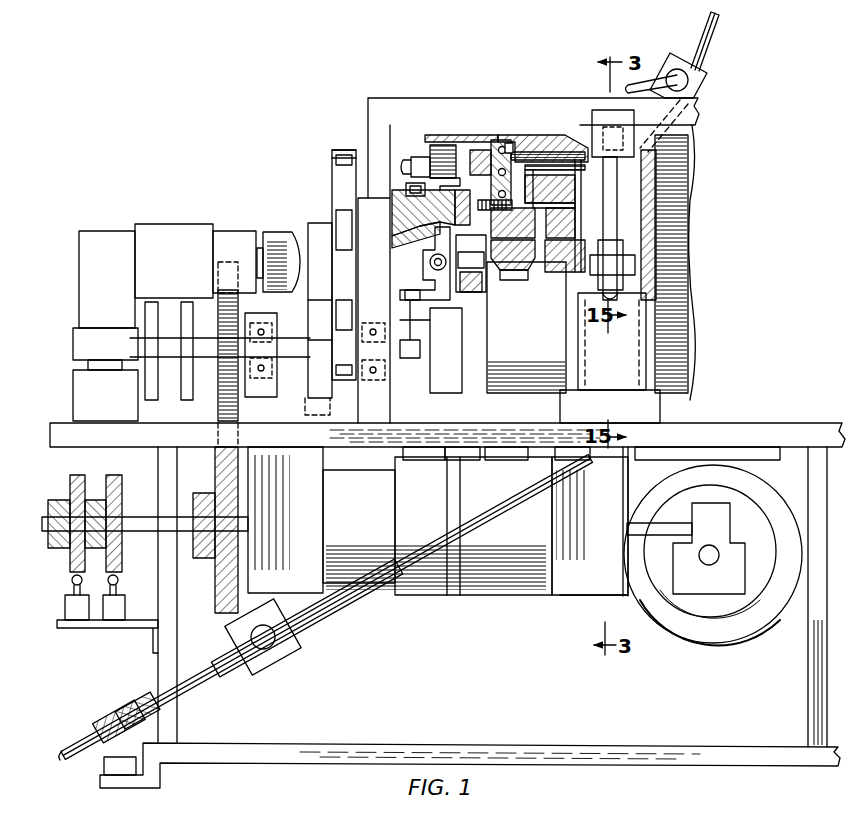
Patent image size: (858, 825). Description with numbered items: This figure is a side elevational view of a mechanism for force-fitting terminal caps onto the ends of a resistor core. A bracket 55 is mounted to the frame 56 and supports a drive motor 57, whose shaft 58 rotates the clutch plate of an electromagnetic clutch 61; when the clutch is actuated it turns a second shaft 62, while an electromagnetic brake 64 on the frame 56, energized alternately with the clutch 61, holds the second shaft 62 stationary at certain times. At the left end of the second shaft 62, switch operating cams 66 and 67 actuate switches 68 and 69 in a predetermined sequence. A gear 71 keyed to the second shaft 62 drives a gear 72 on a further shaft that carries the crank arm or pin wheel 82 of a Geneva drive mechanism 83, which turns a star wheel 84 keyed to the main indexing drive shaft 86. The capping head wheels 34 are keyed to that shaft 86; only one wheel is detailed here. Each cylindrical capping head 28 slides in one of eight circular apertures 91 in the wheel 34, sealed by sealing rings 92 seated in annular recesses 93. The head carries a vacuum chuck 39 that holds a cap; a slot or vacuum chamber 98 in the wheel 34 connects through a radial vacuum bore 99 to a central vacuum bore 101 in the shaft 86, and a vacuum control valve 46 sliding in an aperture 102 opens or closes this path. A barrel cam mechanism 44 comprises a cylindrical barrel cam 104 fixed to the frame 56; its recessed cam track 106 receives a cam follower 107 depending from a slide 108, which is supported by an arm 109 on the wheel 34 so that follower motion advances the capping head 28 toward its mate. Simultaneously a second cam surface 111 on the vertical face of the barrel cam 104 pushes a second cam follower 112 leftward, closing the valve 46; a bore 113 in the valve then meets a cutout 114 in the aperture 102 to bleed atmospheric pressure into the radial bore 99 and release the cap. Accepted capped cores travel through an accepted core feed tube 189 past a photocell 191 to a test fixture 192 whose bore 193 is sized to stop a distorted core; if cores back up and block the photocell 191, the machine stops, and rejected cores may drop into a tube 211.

The capping head 28 is at (548, 135).
The capping head wheel 34 is at (510, 396).
The vacuum chuck 39 is at (590, 150).
The barrel cam mechanism 44 is at (432, 150).
The vacuum control valve 46 is at (492, 240).
The bracket 55 is at (760, 460).
The frame 56 is at (368, 98).
The drive motor 57 is at (688, 644).
The shaft 58 is at (645, 522).
The electromagnetic clutch 61 is at (558, 596).
The second shaft 62 is at (323, 460).
The electromagnetic brake 64 is at (422, 596).
The switch operating cam 66 is at (70, 484).
The switch operating cam 67 is at (122, 498).
The switch 68 is at (65, 605).
The switch 69 is at (122, 598).
The gear 71 is at (215, 472).
The gear 72 is at (216, 404).
The crank arm or pin wheel 82 is at (308, 335).
The Geneva drive mechanism 83 is at (328, 218).
The star wheel 84 is at (334, 146).
The main indexing drive shaft 86 is at (562, 274).
The circular aperture 91 is at (650, 180).
The sealing ring 92 is at (501, 146).
The annular recess 93 is at (509, 143).
The slot or vacuum chamber 98 is at (565, 152).
The radial vacuum bore 99 is at (515, 270).
The central vacuum bore 101 is at (528, 282).
The aperture 102 is at (620, 230).
The cylindrical barrel cam 104 is at (395, 240).
The recessed cam track 106 is at (410, 185).
The cam follower 107 is at (400, 205).
The slide 108 is at (412, 160).
The arm 109 is at (440, 135).
The second cam surface 111 is at (445, 238).
The second cam follower 112 is at (493, 150).
The bore 113 is at (496, 262).
The cutout 114 is at (482, 150).
The accepted core feed tube 189 is at (335, 605).
The photocell 191 is at (275, 661).
The test fixture 192 is at (100, 715).
The bore 193 is at (125, 712).
The tube 211 is at (104, 765).